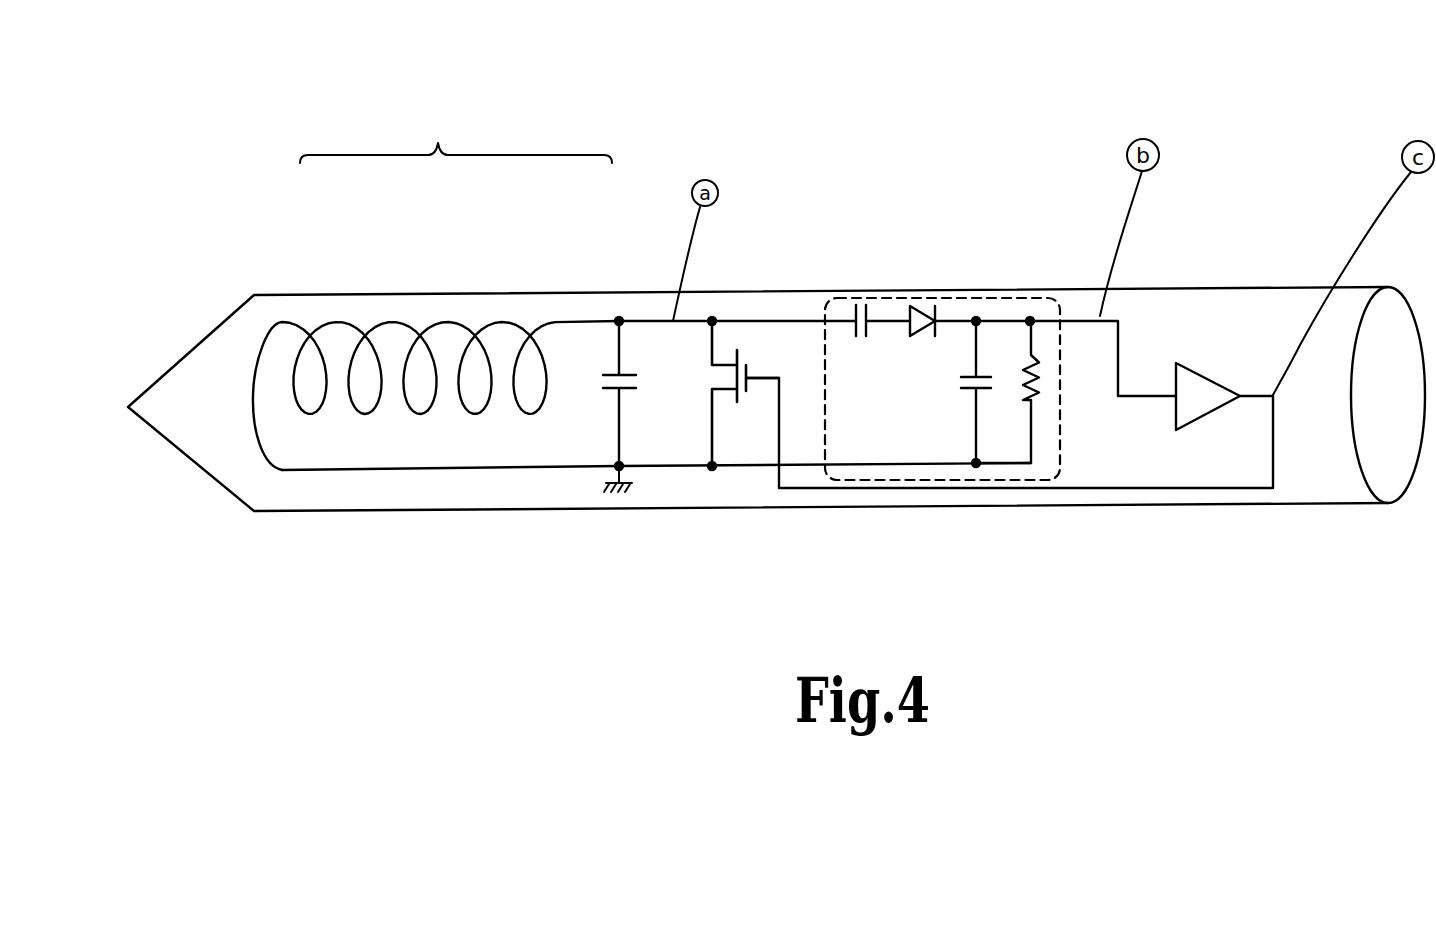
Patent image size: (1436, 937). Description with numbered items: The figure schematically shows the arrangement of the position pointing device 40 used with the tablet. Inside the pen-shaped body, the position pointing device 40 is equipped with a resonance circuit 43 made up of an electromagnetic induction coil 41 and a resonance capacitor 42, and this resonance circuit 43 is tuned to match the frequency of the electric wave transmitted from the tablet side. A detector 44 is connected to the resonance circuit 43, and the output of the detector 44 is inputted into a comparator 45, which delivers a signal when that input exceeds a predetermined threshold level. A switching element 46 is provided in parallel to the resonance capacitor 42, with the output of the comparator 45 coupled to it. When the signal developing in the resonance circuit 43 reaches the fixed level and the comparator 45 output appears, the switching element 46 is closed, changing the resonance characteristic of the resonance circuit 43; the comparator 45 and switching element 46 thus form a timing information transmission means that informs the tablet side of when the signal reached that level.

The position pointing device 40 is at (598, 120).
The electromagnetic induction coil 41 is at (307, 318).
The resonance capacitor 42 is at (593, 377).
The resonance circuit 43 is at (456, 133).
The detector 44 is at (968, 297).
The comparator 45 is at (1207, 377).
The switching element 46 is at (702, 417).